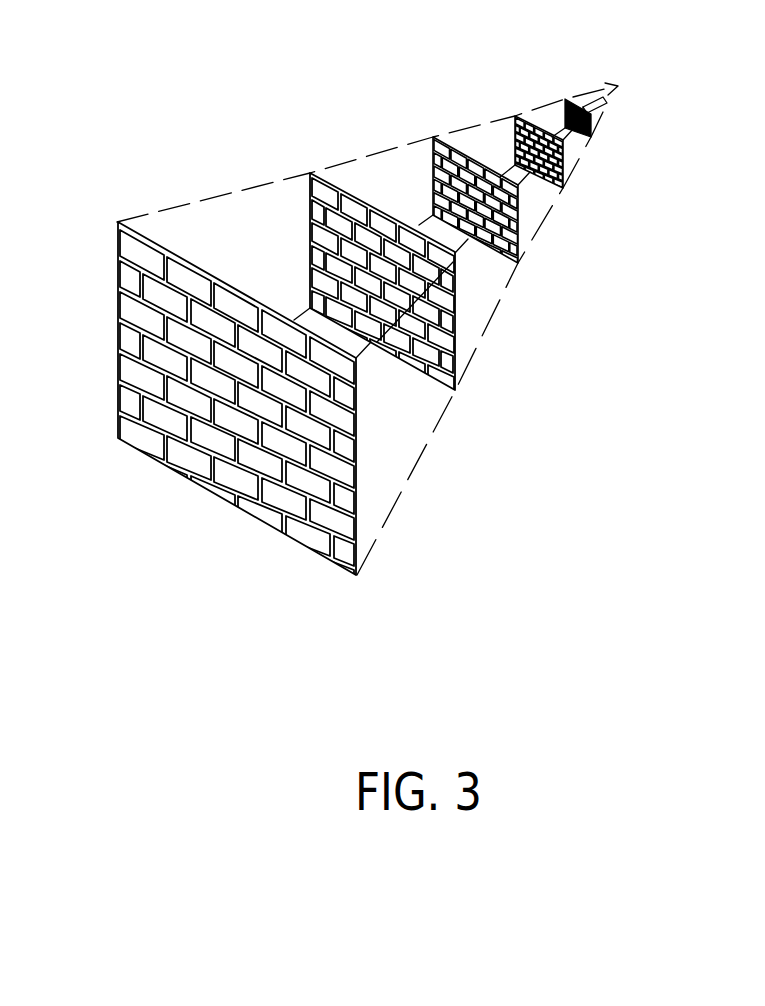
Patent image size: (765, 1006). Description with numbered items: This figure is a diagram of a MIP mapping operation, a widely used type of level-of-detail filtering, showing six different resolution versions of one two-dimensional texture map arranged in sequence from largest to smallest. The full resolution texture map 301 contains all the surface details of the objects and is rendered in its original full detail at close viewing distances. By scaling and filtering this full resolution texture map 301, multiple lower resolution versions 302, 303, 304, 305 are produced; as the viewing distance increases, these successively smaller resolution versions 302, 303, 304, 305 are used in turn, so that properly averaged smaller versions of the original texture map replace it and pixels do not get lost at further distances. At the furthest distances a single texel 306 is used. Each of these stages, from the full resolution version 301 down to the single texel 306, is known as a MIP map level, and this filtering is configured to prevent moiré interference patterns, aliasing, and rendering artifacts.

The full resolution texture map 301 is at (118, 230).
The lower resolution version 302 is at (298, 162).
The lower resolution version 303 is at (428, 126).
The lower resolution version 304 is at (508, 97).
The lower resolution version 305 is at (557, 82).
The single texel 306 is at (620, 78).